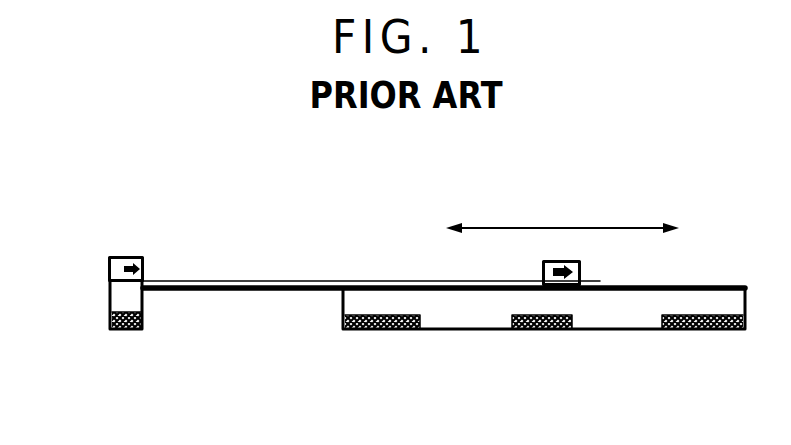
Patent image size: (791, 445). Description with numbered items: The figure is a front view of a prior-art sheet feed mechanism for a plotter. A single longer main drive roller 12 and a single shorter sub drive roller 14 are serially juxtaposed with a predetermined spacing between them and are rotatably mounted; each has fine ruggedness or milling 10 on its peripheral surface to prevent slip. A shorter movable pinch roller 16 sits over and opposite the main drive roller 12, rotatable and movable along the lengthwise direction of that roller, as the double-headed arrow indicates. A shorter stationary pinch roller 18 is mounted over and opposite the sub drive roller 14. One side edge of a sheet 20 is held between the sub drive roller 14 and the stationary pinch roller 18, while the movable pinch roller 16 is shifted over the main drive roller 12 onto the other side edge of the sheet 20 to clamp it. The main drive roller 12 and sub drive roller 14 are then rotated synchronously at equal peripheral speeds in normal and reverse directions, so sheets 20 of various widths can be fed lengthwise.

The milling 10 is at (110, 323).
The main drive roller 12 is at (577, 333).
The sub drive roller 14 is at (128, 329).
The movable pinch roller 16 is at (572, 285).
The stationary pinch roller 18 is at (130, 257).
The sheet 20 is at (260, 280).